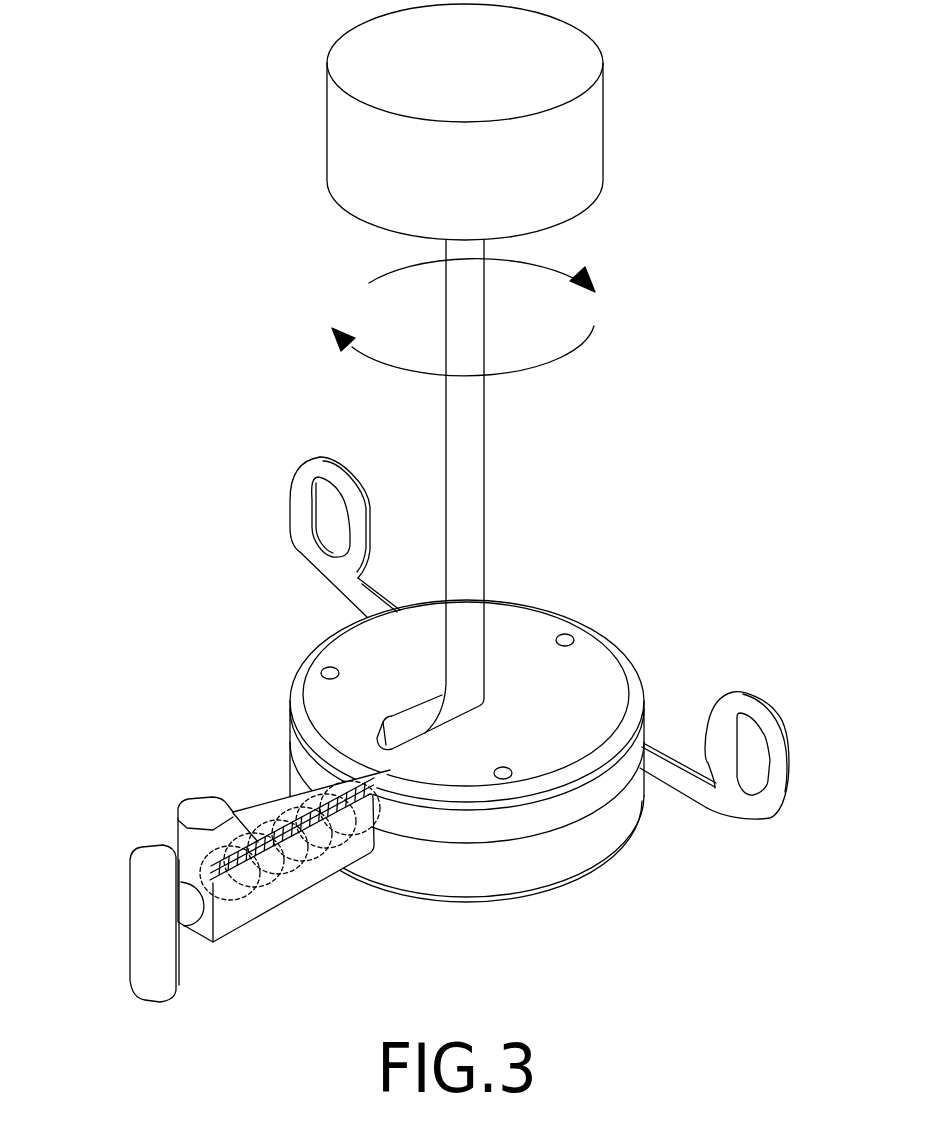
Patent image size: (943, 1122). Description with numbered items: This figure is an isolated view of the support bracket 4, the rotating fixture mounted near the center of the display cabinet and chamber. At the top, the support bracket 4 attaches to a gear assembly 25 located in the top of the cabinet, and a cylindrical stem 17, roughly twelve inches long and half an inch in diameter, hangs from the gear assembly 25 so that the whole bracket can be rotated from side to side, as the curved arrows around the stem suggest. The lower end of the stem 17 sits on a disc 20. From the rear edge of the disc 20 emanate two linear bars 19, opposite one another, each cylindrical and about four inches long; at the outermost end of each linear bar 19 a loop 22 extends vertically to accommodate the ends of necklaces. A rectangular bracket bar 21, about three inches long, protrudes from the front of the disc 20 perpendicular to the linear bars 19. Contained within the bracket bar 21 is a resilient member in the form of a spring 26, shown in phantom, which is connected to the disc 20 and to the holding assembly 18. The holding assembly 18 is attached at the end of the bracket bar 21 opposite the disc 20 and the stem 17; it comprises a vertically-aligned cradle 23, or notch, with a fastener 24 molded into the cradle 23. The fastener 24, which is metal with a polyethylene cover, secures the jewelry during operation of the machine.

The support bracket 4 is at (583, 878).
The stem 17 is at (465, 470).
The holding assembly 18 is at (215, 943).
The linear bars 19 is at (683, 780).
The disc 20 is at (360, 670).
The bracket bar 21 is at (280, 806).
The loop 22 is at (318, 468).
The cradle 23 is at (168, 840).
The fastener 24 is at (203, 839).
The gear assembly 25 is at (433, 198).
The spring 26 is at (280, 870).